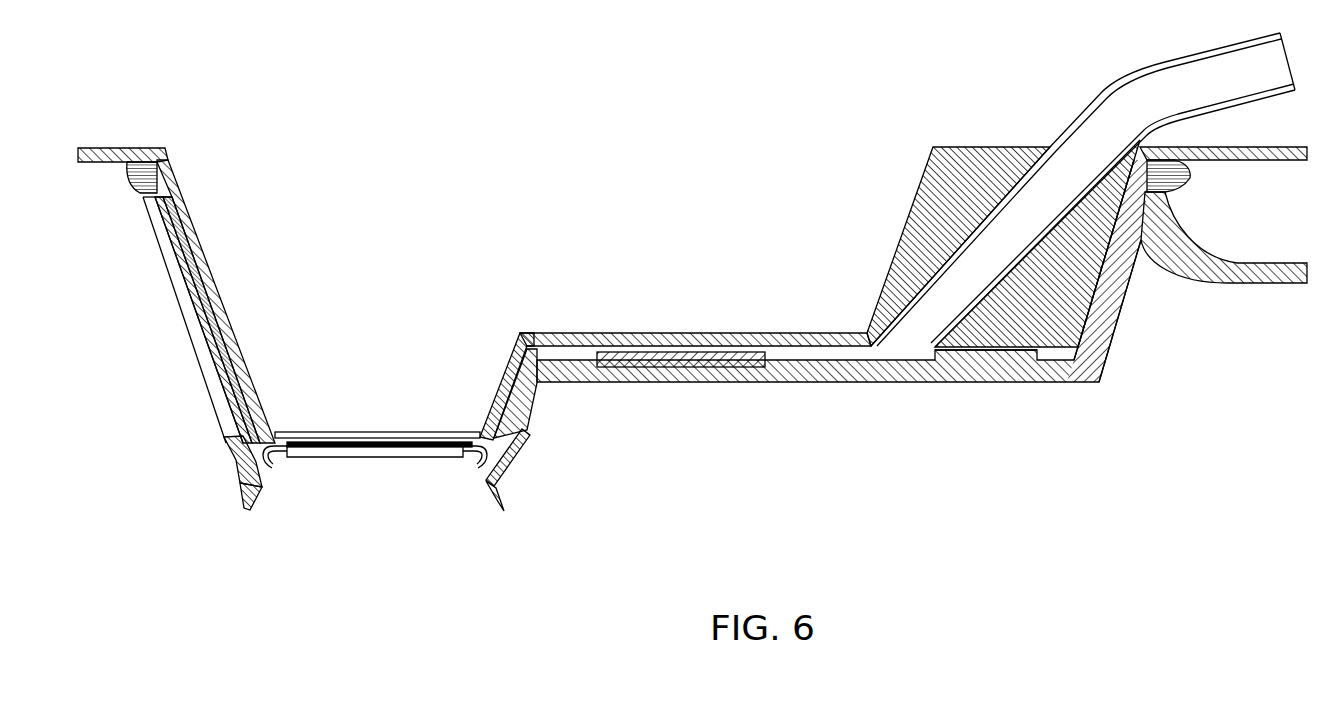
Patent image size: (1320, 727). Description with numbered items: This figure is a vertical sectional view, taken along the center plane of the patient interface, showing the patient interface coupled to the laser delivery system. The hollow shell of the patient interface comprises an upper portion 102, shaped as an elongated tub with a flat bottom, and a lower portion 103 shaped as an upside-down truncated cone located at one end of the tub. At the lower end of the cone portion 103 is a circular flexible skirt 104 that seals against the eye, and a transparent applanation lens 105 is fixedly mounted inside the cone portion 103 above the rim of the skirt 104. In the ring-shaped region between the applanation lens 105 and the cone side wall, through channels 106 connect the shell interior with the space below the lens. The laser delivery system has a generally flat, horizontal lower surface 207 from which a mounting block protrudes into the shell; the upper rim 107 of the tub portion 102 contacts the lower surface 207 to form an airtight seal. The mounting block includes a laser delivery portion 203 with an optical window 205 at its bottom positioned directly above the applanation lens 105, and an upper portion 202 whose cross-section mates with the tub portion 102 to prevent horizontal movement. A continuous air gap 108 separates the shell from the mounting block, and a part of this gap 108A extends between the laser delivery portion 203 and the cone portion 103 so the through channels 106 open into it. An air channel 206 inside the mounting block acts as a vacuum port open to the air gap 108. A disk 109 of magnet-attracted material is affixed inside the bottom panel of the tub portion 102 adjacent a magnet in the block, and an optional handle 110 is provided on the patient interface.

The upper portion 102 is at (1055, 373).
The lower portion 103 is at (523, 417).
The flexible skirt 104 is at (246, 502).
The applanation lens 105 is at (411, 455).
The through channels 106 is at (250, 465).
The upper rim 107 is at (133, 178).
The air gap 108 is at (813, 350).
The part of the air gap 108A is at (520, 437).
The disk 109 is at (683, 367).
The handle 110 is at (1244, 285).
The upper portion of the PI mounting block 202 is at (1093, 330).
The laser delivery portion 203 is at (268, 373).
The optical window 205 is at (378, 432).
The air channel 206 is at (913, 347).
The lower surface 207 is at (1247, 162).